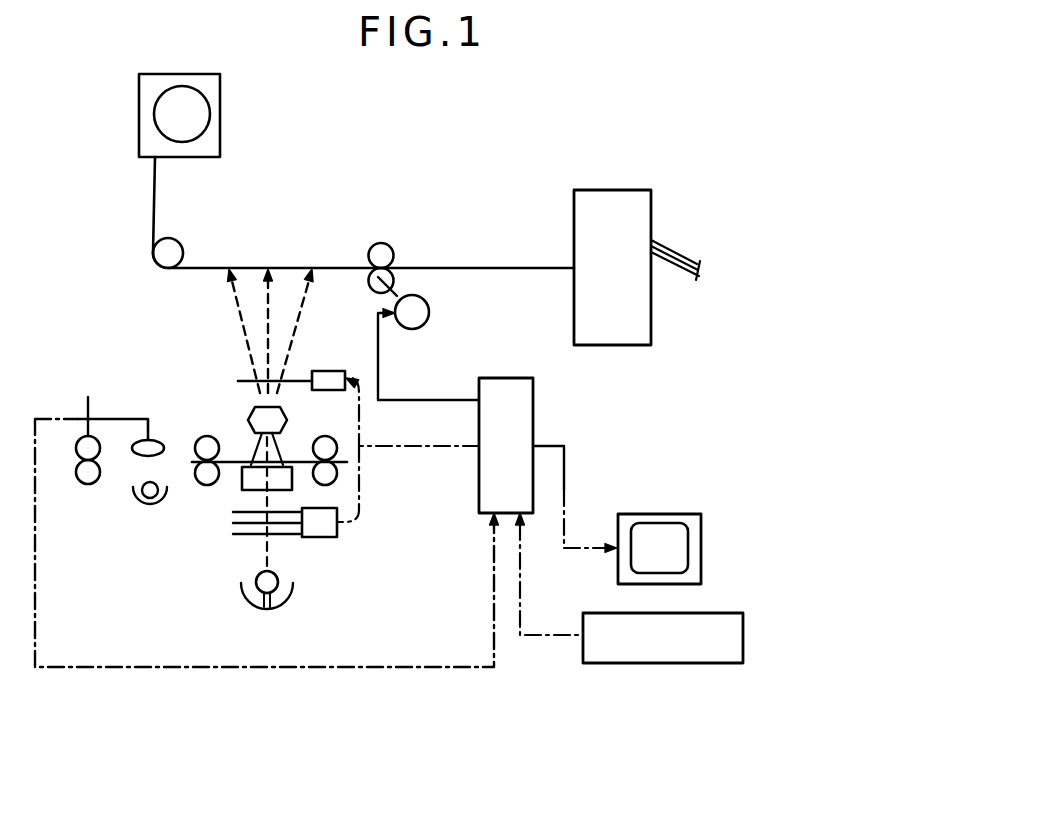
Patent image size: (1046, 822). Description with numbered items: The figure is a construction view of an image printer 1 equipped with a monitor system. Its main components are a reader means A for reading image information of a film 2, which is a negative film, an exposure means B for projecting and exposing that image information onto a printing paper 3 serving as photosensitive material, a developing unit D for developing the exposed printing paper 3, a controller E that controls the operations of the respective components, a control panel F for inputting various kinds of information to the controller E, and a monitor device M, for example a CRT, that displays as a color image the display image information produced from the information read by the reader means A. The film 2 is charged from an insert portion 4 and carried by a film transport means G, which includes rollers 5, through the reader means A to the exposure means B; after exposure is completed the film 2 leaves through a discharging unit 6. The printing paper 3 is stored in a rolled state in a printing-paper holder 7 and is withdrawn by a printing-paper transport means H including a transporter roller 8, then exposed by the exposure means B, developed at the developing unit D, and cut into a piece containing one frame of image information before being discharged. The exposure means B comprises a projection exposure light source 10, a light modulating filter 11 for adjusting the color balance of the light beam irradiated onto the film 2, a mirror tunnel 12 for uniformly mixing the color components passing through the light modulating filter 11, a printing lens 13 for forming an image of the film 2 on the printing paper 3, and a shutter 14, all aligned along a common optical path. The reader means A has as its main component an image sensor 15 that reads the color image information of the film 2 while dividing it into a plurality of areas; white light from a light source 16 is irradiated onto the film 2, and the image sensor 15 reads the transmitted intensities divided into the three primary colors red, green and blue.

The image printer 1 is at (426, 172).
The film 2 is at (230, 458).
The printing paper 3 is at (155, 213).
The insert portion 4 is at (66, 462).
The rollers 5 is at (372, 503).
The discharging unit 6 is at (349, 463).
The printing-paper holder 7 is at (220, 125).
The transporter roller 8 is at (182, 253).
The projection exposure light source 10 is at (243, 597).
The light modulating filter 11 is at (290, 537).
The mirror tunnel 12 is at (282, 463).
The printing lens 13 is at (250, 418).
The shutter 14 is at (238, 379).
The image sensor 15 is at (158, 440).
The light source 16 is at (148, 500).
The reader means A is at (130, 418).
The exposure means B is at (300, 563).
The developing unit D is at (607, 190).
The controller E is at (533, 403).
The control panel F is at (743, 642).
The film transport means G is at (105, 500).
The printing-paper transport means H is at (418, 262).
The monitor device M is at (618, 577).